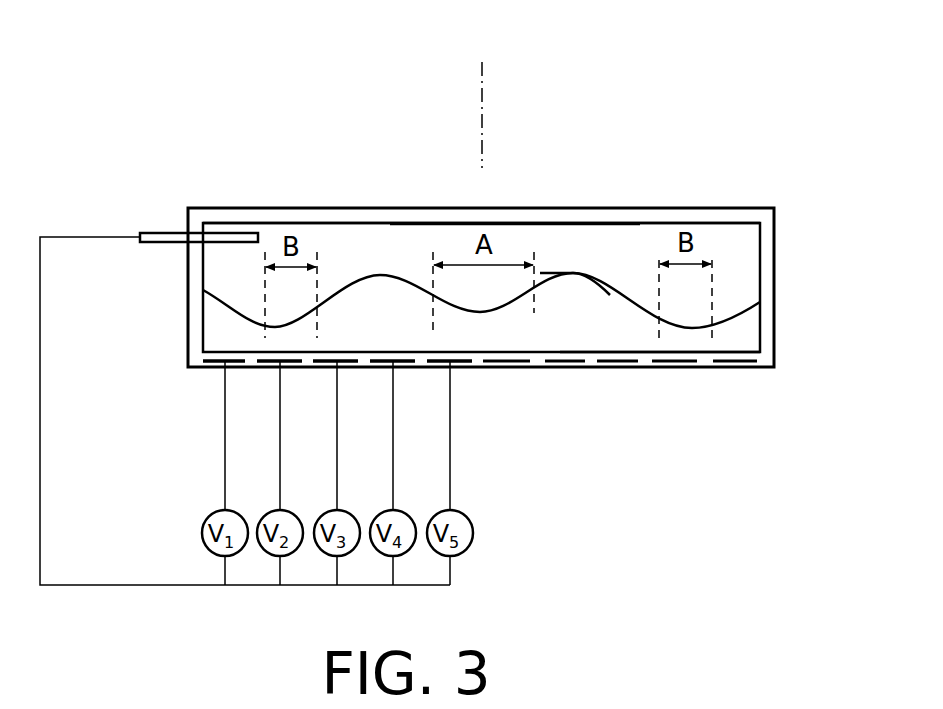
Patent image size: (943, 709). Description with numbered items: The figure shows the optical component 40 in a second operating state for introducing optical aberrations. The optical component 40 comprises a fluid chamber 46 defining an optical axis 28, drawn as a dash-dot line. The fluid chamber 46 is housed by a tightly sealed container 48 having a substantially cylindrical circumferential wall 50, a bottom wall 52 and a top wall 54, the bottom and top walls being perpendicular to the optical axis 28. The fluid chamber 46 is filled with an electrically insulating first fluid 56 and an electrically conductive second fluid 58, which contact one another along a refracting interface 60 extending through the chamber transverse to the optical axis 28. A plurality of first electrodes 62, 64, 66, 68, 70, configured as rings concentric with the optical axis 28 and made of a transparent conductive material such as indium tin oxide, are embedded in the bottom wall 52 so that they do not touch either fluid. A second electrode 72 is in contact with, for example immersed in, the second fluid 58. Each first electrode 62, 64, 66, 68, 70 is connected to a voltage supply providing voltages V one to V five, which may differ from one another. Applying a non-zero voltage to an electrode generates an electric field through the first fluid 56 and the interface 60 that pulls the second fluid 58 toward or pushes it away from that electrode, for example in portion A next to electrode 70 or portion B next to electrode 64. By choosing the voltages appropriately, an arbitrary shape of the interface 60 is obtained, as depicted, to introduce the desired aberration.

The optical axis 28 is at (480, 116).
The optical component 40 is at (481, 226).
The fluid chamber 46 is at (346, 242).
The container 48 is at (727, 194).
The circumferential wall 50 is at (768, 310).
The bottom wall 52 is at (536, 362).
The top wall 54 is at (535, 215).
The first fluid 56 is at (634, 336).
The second fluid 58 is at (568, 245).
The interface 60 is at (573, 276).
The first electrode 62 is at (212, 363).
The first electrode 64 is at (288, 363).
The first electrode 66 is at (345, 363).
The first electrode 68 is at (401, 363).
The first electrode 70 is at (457, 363).
The second electrode 72 is at (230, 236).